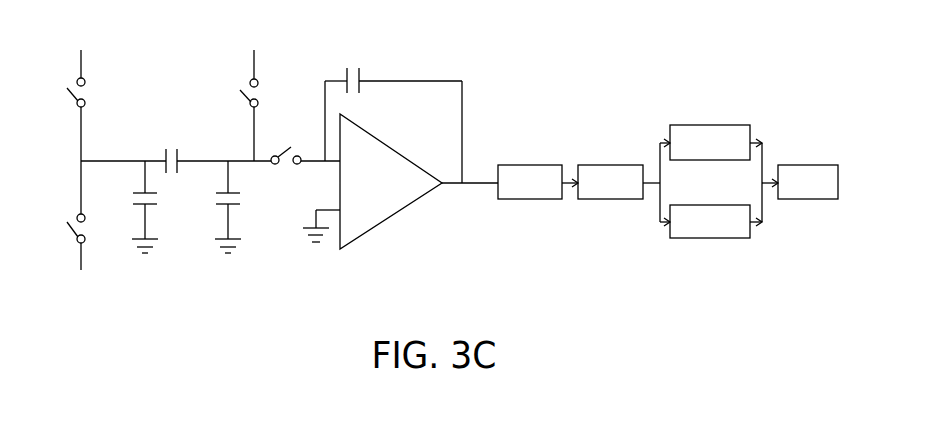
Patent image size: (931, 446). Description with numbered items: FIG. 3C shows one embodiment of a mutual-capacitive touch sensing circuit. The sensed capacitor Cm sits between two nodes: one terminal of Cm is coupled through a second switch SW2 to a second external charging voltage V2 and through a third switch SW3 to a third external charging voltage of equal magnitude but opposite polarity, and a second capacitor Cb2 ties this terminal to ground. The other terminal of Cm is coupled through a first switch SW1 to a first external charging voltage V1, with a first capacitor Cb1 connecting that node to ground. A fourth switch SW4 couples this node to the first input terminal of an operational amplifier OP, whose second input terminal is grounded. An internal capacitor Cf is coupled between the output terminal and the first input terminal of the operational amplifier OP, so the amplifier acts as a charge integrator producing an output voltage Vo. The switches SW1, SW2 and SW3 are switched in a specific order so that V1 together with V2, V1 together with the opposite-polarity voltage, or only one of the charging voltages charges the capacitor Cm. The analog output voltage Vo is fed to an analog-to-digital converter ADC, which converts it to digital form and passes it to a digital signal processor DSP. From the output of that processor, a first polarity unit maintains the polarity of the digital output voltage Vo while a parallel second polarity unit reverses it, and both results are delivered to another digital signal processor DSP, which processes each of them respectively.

The second external charging voltage V2 is at (82, 49).
The first external charging voltage V1 is at (254, 49).
The first switch SW1 is at (231, 120).
The second switch SW2 is at (57, 119).
The third switch SW3 is at (58, 215).
The fourth switch SW4 is at (289, 141).
The capacitor Cm is at (172, 146).
The first capacitor Cb1 is at (208, 207).
The second capacitor Cb2 is at (125, 207).
The internal capacitor Cf is at (393, 110).
The operational amplifier OP is at (392, 194).
The output voltage Vo is at (470, 168).
The analog-to-digital converter ADC is at (538, 182).
The digital signal processor DSP is at (708, 182).